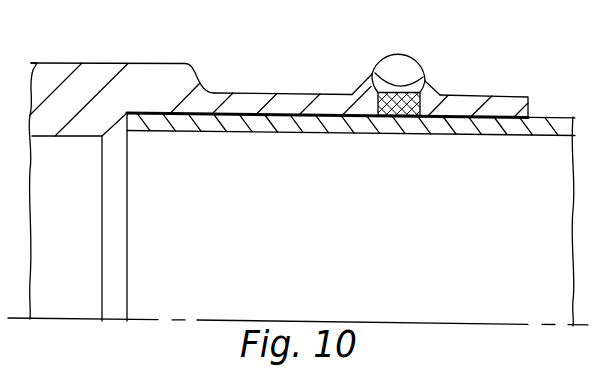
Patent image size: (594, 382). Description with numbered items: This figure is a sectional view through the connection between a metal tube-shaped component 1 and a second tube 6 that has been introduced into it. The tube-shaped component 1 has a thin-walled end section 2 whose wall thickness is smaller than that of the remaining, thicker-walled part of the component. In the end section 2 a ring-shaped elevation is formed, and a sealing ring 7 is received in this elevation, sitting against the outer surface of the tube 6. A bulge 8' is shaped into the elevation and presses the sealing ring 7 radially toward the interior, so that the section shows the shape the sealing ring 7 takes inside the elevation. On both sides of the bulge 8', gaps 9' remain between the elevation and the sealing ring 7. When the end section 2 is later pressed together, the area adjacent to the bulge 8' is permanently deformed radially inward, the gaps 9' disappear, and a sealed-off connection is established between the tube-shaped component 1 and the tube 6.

The tube-shaped component 1 is at (87, 90).
The end section 2 is at (278, 103).
The tube 6 is at (548, 128).
The sealing ring 7 is at (397, 110).
The bulge 8' is at (426, 60).
The gaps 9' is at (427, 60).